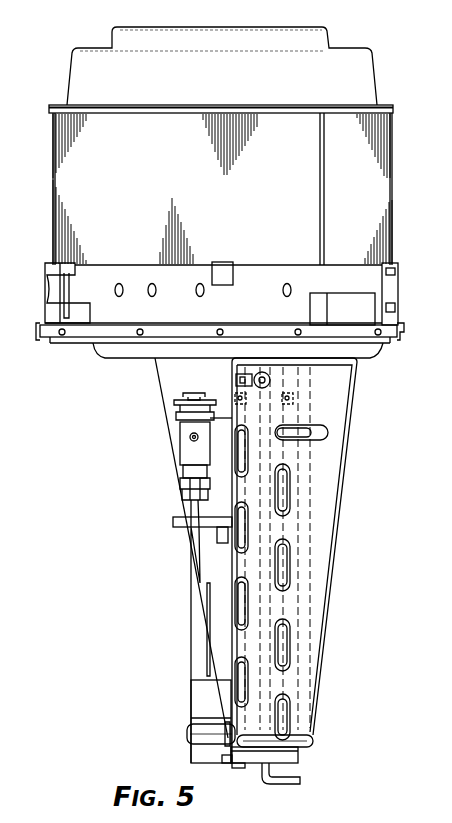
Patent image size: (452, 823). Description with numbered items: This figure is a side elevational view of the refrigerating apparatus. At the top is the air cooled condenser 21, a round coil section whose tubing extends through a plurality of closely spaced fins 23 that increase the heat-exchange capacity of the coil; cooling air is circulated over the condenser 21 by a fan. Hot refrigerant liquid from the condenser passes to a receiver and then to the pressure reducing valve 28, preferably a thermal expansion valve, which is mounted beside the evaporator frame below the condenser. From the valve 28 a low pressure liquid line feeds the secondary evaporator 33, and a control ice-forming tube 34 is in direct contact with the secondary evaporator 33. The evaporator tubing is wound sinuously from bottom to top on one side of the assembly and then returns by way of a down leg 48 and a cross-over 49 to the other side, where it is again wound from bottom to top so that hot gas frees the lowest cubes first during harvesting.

The air cooled condenser 21 is at (394, 188).
The fins 23 is at (380, 133).
The pressure reducing valve 28 is at (190, 450).
The secondary evaporator 33 is at (228, 738).
The control ice-forming tube 34 is at (212, 695).
The down leg 48 is at (310, 716).
The cross-over 49 is at (312, 743).